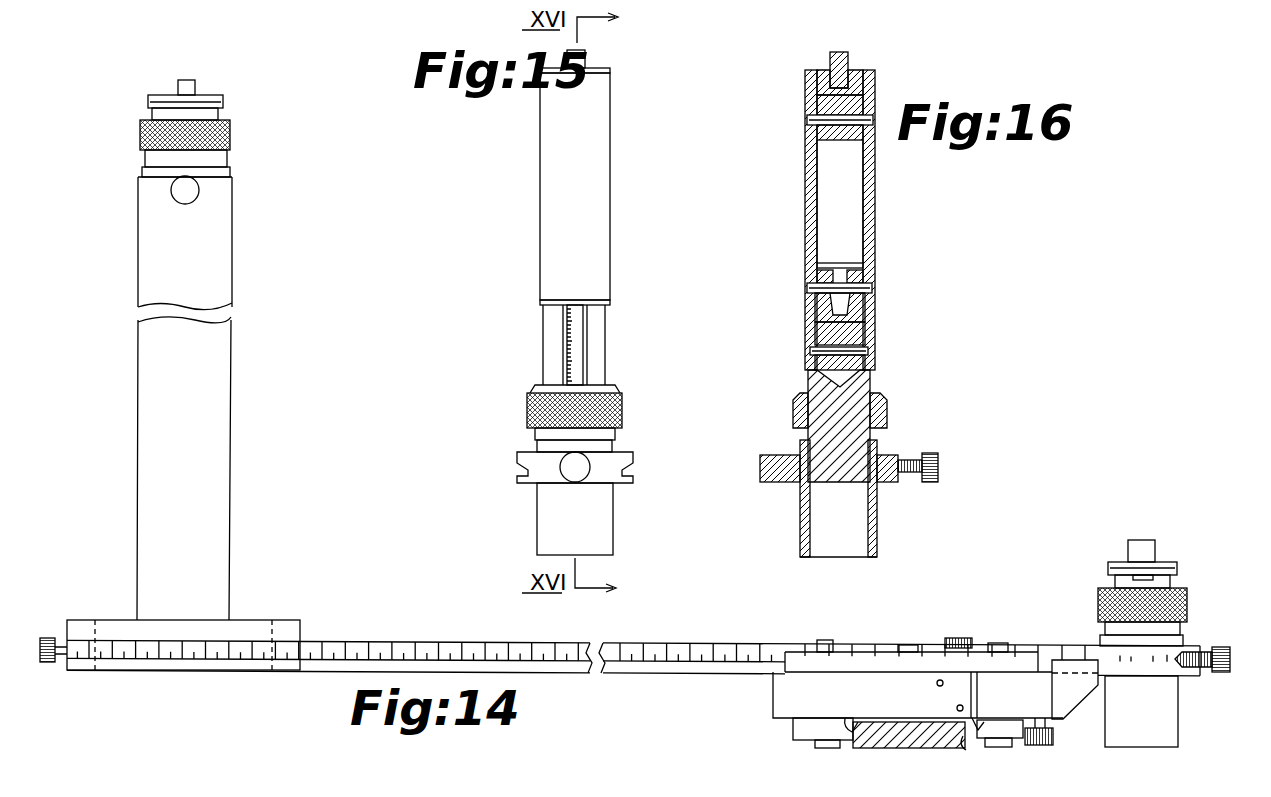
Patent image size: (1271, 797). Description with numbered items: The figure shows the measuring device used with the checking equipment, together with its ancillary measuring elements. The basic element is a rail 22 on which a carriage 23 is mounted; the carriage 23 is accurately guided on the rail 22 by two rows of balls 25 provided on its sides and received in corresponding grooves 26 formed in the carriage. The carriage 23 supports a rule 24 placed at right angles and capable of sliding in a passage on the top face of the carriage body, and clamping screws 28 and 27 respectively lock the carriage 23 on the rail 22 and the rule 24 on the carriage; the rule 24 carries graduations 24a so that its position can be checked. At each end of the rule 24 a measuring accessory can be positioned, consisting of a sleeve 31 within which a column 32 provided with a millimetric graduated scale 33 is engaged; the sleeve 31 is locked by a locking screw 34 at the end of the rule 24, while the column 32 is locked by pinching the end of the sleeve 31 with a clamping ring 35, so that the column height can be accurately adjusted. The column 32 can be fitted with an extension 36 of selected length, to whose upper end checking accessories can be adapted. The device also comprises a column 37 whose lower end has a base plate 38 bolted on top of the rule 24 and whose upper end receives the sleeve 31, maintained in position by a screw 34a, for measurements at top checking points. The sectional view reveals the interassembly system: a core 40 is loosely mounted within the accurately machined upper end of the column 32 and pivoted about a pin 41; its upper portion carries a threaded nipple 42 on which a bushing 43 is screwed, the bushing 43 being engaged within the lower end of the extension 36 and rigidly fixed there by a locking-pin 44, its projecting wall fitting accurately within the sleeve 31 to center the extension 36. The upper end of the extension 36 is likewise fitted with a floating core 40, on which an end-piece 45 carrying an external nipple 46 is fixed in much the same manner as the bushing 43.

In FIG. 14, the rail 22 is at (885, 738).
In FIG. 14, the carriage 23 is at (820, 685).
In FIG. 14, the rule 24 is at (670, 648).
In FIG. 15, the rule 24 is at (603, 467).
In FIG. 16, the rule 24 is at (773, 457).
In FIG. 14, the graduations 24a is at (410, 640).
In FIG. 14, the balls 25 is at (846, 730).
In FIG. 14, the grooves 26 is at (963, 738).
In FIG. 14, the clamping screw 27 is at (1055, 735).
In FIG. 14, the clamping screw 28 is at (959, 637).
In FIG. 14, the sleeve 31 is at (160, 172).
In FIG. 15, the sleeve 31 is at (557, 512).
In FIG. 16, the sleeve 31 is at (877, 513).
In FIG. 14, the column 32 is at (1108, 570).
In FIG. 15, the column 32 is at (603, 338).
In FIG. 16, the column 32 is at (858, 383).
In FIG. 15, the millimetric graduated scale 33 is at (572, 347).
In FIG. 14, the locking screw 34 is at (46, 636).
In FIG. 14, the screw 34a is at (185, 188).
In FIG. 14, the clamping ring 35 is at (232, 142).
In FIG. 15, the clamping ring 35 is at (530, 415).
In FIG. 16, the clamping ring 35 is at (887, 417).
In FIG. 15, the extension 36 is at (600, 152).
In FIG. 16, the extension 36 is at (868, 191).
In FIG. 14, the column 37 is at (217, 362).
In FIG. 14, the base plate 38 is at (252, 628).
In FIG. 16, the core 40 is at (868, 110).
In FIG. 16, the pin 41 is at (828, 350).
In FIG. 16, the threaded nipple 42 is at (838, 320).
In FIG. 16, the bushing 43 is at (813, 250).
In FIG. 16, the locking-pin 44 is at (837, 290).
In FIG. 14, the end-piece 45 is at (1108, 563).
In FIG. 16, the end-piece 45 is at (822, 73).
In FIG. 14, the external nipple 46 is at (179, 86).
In FIG. 15, the external nipple 46 is at (590, 59).
In FIG. 16, the external nipple 46 is at (852, 58).